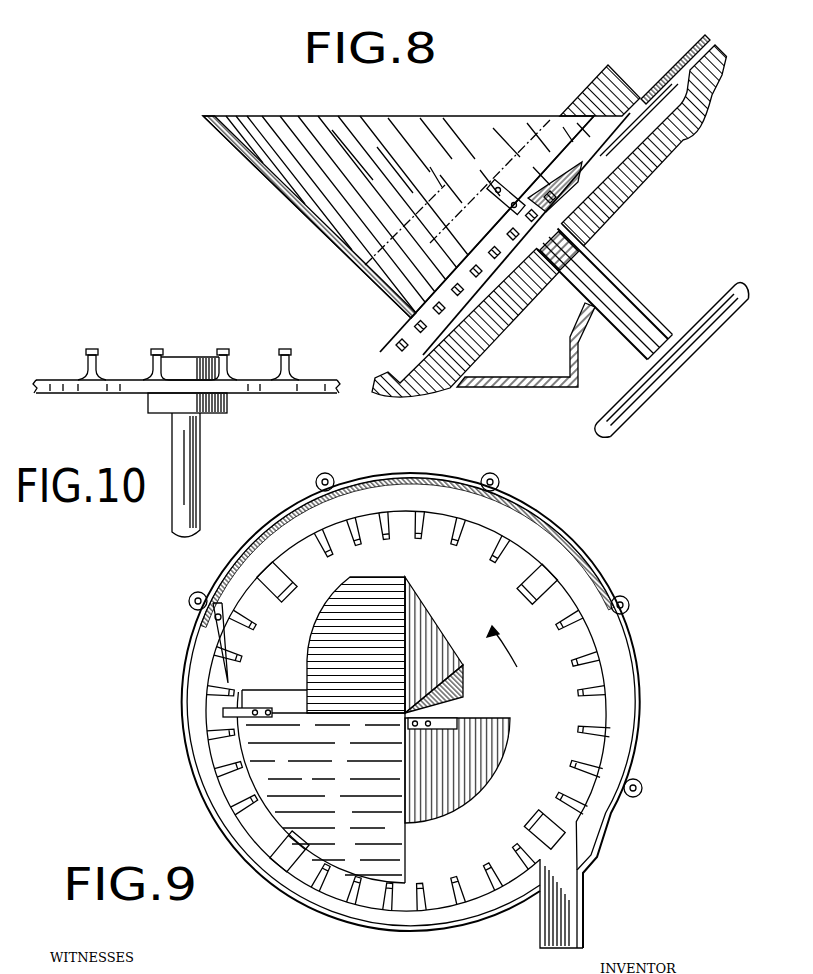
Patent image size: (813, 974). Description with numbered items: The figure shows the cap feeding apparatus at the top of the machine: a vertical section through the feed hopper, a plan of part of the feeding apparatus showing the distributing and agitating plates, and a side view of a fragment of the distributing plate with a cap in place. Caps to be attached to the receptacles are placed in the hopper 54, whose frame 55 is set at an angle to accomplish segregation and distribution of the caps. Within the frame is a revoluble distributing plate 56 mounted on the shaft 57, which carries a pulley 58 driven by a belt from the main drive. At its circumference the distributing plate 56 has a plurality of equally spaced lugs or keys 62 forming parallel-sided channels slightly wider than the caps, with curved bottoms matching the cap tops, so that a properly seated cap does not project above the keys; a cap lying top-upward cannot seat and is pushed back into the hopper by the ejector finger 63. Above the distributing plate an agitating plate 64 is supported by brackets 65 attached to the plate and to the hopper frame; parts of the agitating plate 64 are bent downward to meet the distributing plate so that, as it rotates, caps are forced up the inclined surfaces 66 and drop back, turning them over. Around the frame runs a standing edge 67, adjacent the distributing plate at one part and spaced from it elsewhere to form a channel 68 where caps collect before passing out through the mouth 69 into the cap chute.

In FIG. 8, the hopper 54 is at (421, 191).
In FIG. 8, the frame 55 is at (673, 147).
In FIG. 8, the distributing plate 56 is at (613, 163).
In FIG. 8, the shaft 57 is at (610, 280).
In FIG. 10, the shaft 57 is at (183, 437).
In FIG. 8, the pulley 58 is at (713, 310).
In FIG. 9, the lugs or keys 62 is at (488, 554).
In FIG. 10, the lugs or keys 62 is at (222, 350).
In FIG. 9, the ejector finger 63 is at (208, 643).
In FIG. 8, the agitating plate 64 is at (503, 225).
In FIG. 9, the agitating plate 64 is at (314, 730).
In FIG. 8, the brackets 65 is at (488, 182).
In FIG. 9, the brackets 65 is at (448, 716).
In FIG. 9, the inclined surfaces 66 is at (340, 611).
In FIG. 8, the standing edge 67 is at (716, 40).
In FIG. 9, the standing edge 67 is at (637, 649).
In FIG. 8, the channel 68 is at (693, 59).
In FIG. 9, the channel 68 is at (632, 746).
In FIG. 9, the mouth 69 is at (580, 907).